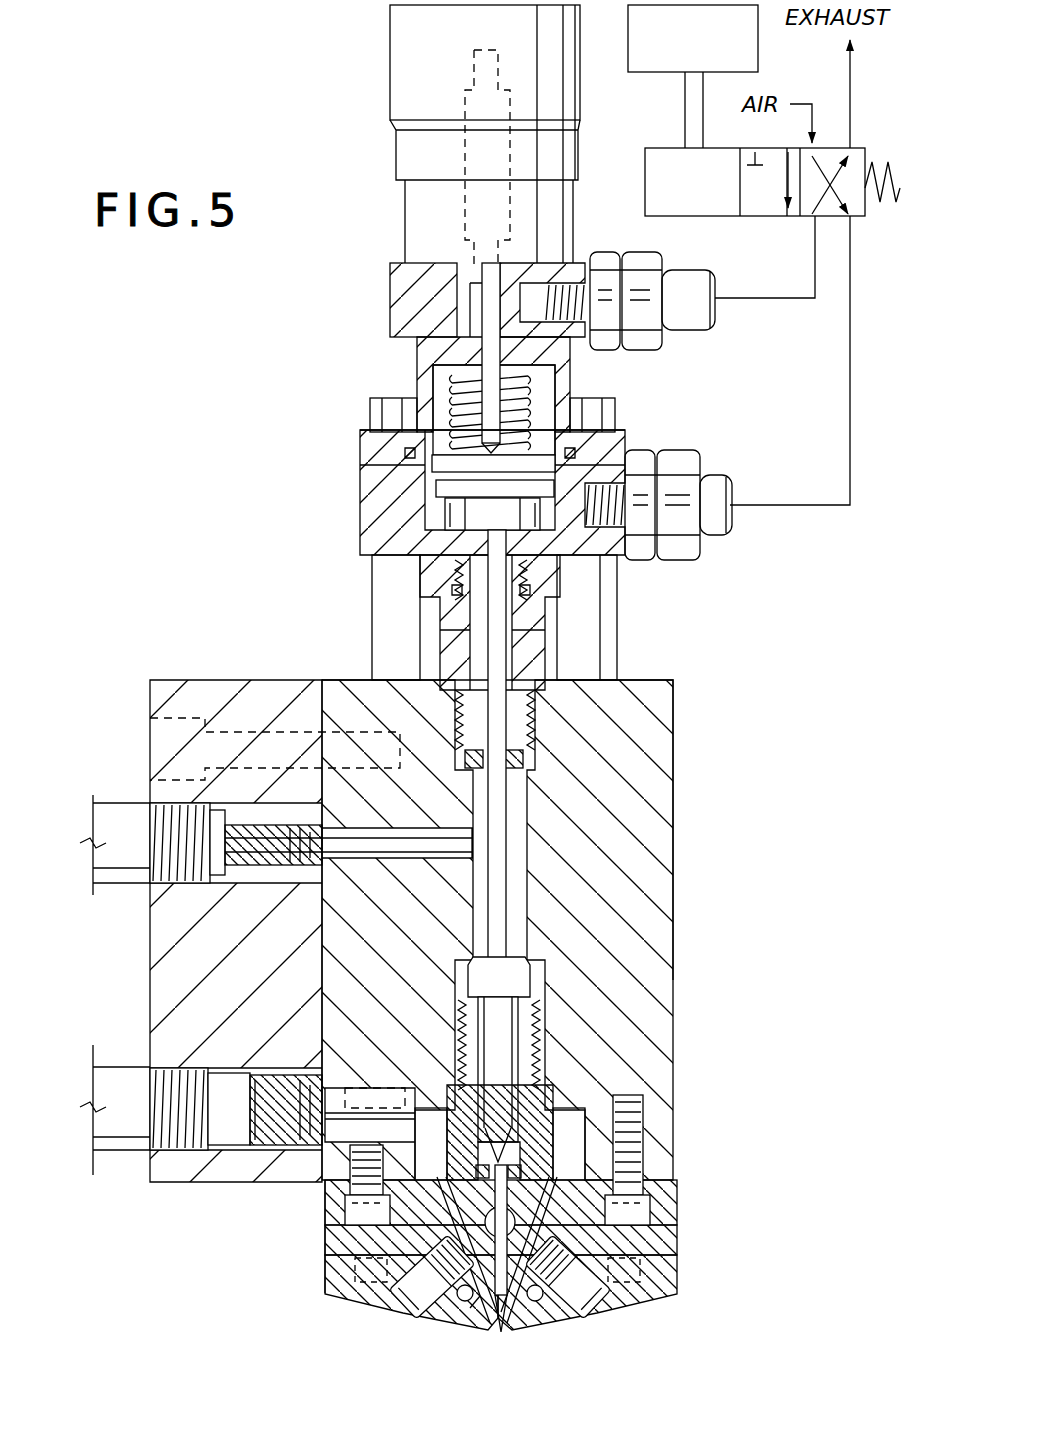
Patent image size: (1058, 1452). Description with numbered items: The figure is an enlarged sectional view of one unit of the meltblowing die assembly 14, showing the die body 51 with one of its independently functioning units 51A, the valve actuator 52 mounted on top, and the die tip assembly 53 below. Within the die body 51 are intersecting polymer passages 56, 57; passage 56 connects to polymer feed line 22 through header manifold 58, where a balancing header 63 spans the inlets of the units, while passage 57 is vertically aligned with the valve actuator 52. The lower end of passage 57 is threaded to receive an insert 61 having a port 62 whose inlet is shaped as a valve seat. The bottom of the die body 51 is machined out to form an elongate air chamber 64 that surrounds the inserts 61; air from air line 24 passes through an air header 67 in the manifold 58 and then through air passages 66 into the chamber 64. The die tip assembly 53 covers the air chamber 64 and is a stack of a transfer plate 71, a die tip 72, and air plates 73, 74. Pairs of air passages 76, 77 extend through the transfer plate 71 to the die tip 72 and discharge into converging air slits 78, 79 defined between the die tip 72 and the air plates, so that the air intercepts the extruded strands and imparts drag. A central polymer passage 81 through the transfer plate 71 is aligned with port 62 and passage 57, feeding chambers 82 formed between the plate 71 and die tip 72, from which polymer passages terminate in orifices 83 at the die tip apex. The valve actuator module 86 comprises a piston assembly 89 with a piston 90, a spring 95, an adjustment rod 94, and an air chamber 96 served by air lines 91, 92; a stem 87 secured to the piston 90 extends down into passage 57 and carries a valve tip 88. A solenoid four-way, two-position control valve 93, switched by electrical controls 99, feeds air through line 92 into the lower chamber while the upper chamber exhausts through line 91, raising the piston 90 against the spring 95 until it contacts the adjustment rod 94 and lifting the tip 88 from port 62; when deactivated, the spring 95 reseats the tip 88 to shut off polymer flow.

The die assembly 14 is at (285, 468).
The polymer feed line 22 is at (118, 825).
The air line 24 is at (122, 1125).
The die body 51 is at (678, 985).
The unit 51A is at (675, 716).
The valve actuator 52 is at (400, 197).
The die tip assembly 53 is at (305, 1262).
The polymer passage 56 is at (415, 848).
The polymer passage 57 is at (520, 936).
The header manifold 58 is at (165, 700).
The insert 61 is at (570, 1140).
The port 62 is at (455, 1150).
The balancing header 63 is at (275, 840).
The air chamber 64 is at (600, 1150).
The air passage 66 is at (345, 1105).
The air header 67 is at (285, 1100).
The transfer plate 71 is at (665, 1202).
The die tip 72 is at (525, 1237).
The air plate 73 is at (330, 1298).
The air plate 74 is at (665, 1268).
The air passage 76 is at (395, 1310).
The air passage 77 is at (615, 1300).
The air slit 78 is at (472, 1306).
The air slit 79 is at (542, 1300).
The central polymer passage 81 is at (497, 1195).
The chamber 82 is at (458, 1300).
The orifice 83 is at (502, 1325).
The valve actuator module 86 is at (412, 355).
The stem 87 is at (497, 793).
The valve tip 88 is at (553, 1080).
The piston assembly 89 is at (555, 450).
The piston 90 is at (440, 495).
The air line 91 is at (690, 300).
The air line 92 is at (715, 518).
The control valve 93 is at (708, 198).
The adjustment rod 94 is at (487, 300).
The spring 95 is at (455, 392).
The air chamber 96 is at (545, 382).
The electrical controls 99 is at (679, 55).